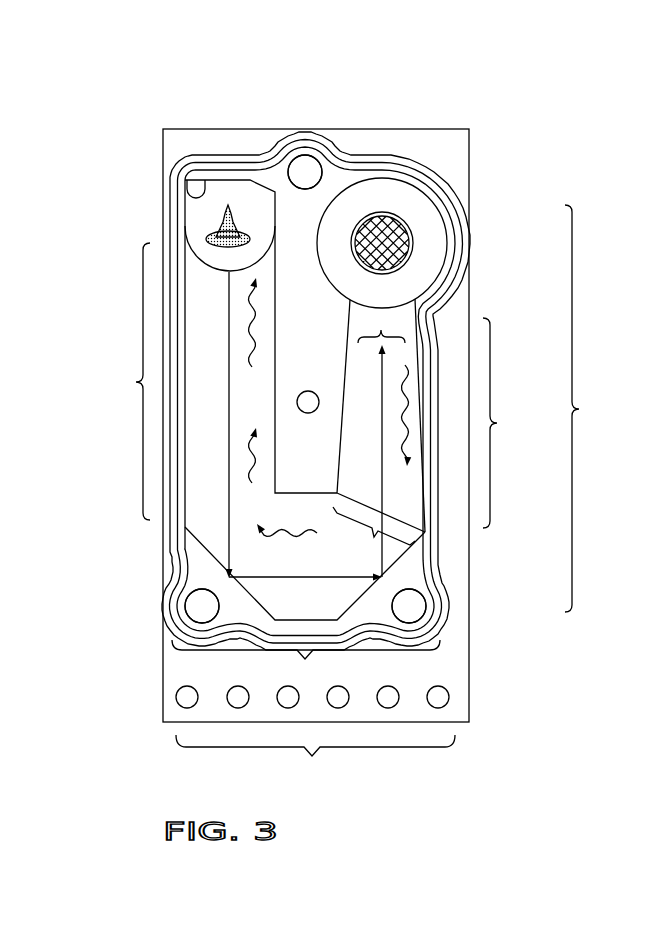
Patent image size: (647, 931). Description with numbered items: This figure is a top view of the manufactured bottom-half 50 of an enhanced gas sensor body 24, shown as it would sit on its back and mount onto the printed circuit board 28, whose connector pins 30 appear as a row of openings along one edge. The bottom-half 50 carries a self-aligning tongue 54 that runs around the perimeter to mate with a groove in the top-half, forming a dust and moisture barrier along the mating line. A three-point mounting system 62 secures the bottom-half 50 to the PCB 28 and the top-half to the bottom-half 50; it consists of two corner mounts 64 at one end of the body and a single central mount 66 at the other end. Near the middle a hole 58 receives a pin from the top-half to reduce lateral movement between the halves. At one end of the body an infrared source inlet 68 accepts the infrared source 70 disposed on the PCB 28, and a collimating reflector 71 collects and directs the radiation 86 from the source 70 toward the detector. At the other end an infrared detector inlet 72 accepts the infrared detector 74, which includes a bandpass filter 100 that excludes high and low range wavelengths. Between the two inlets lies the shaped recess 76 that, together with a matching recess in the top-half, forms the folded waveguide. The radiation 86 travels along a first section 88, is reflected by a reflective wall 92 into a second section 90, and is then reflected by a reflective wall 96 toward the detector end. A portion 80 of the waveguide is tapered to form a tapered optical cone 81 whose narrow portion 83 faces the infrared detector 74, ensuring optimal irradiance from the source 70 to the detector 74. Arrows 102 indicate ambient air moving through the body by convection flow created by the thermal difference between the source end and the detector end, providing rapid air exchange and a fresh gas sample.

The bottom-half 50 is at (148, 91).
The sensor body 24 is at (175, 147).
The self-aligning tongue 54 is at (169, 200).
The printed circuit board 28 is at (168, 571).
The infrared source inlet 68 is at (258, 220).
The collimating reflector 71 is at (199, 194).
The infrared source 70 is at (228, 204).
The infrared detector inlet 72 is at (385, 195).
The infrared detector 74 is at (414, 245).
The bandpass filter 100 is at (367, 254).
The narrow portion 83 is at (397, 318).
The portion of the shaped waveguide 80 is at (378, 330).
The hole 58 is at (309, 392).
The radiation 86 is at (229, 413).
The tapered optical cone 81 is at (355, 500).
The shaped recess 76 is at (410, 503).
The arrows 102 is at (243, 425).
The first section 88 is at (124, 381).
The reflective wall 96 is at (593, 408).
The reflective wall 92 is at (264, 609).
The three-point mounting system 62 is at (305, 389).
The single central mount 66 is at (306, 170).
The corner mounts 64 is at (200, 607).
The second section 90 is at (306, 665).
The connector pins 30 is at (315, 738).